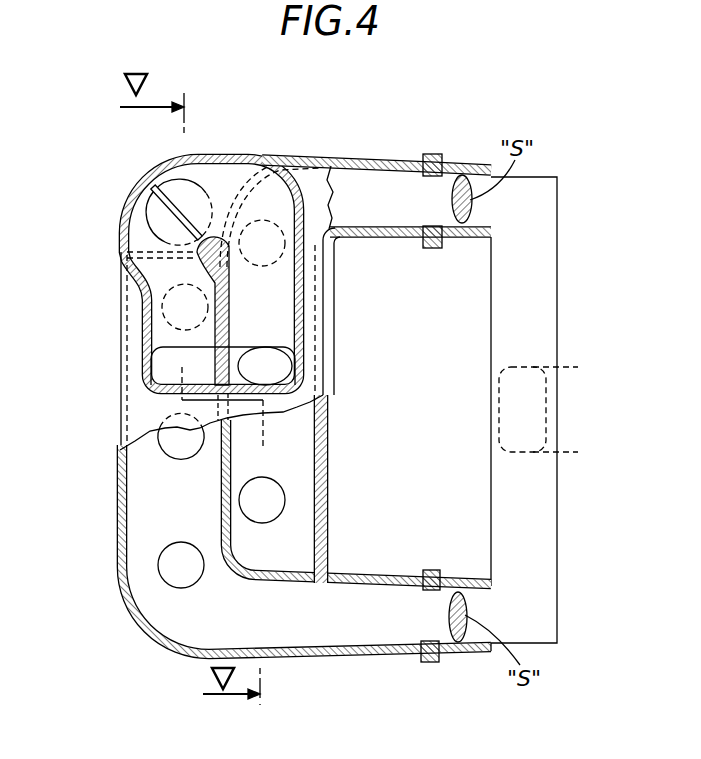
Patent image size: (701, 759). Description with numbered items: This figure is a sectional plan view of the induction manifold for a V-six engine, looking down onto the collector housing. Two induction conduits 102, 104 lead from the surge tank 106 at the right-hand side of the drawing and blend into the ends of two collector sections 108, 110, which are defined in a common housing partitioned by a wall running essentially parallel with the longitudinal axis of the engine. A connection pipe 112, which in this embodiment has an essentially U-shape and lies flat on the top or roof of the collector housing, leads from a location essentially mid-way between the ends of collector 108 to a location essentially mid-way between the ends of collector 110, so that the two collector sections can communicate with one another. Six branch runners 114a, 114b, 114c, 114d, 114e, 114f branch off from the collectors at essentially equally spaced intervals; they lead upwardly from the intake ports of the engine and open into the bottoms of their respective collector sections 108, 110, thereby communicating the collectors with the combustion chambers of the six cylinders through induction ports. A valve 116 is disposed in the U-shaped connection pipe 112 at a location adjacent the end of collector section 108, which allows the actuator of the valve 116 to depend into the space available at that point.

The induction conduit 102 is at (327, 634).
The induction conduit 104 is at (396, 175).
The surge tank 106 is at (540, 555).
The collector section 108 is at (143, 495).
The collector section 110 is at (288, 460).
The connection pipe 112 is at (167, 273).
The branch runner 114a is at (172, 572).
The branch runner 114b is at (168, 438).
The branch runner 114c is at (185, 307).
The branch runner 114d is at (275, 253).
The branch runner 114e is at (270, 367).
The branch runner 114f is at (267, 500).
The valve 116 is at (158, 199).